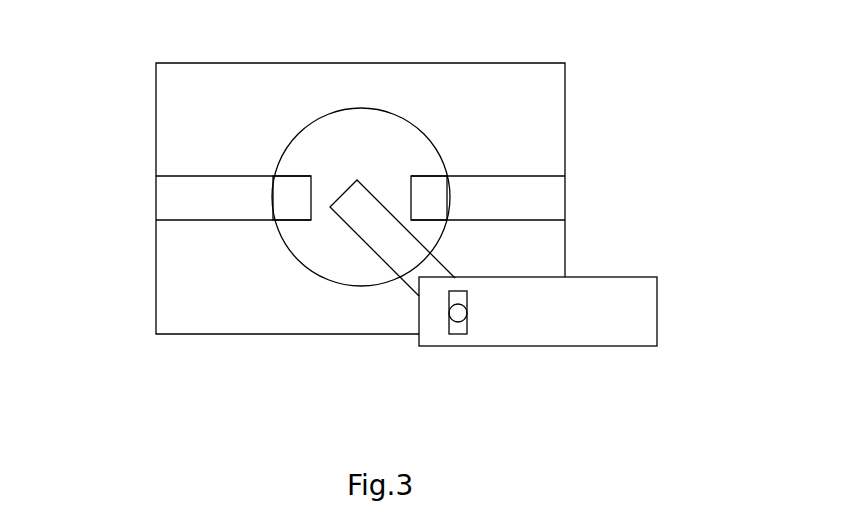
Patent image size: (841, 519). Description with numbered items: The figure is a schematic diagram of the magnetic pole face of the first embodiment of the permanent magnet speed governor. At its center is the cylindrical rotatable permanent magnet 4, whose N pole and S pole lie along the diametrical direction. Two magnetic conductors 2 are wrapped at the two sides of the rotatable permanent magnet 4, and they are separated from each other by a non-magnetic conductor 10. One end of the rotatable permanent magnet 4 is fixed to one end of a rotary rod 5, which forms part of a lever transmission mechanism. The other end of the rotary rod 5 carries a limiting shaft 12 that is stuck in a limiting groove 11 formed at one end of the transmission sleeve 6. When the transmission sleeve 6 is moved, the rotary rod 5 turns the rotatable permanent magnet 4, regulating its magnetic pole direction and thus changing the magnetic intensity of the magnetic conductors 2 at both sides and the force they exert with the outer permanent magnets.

The magnetic conductor 2 is at (200, 113).
The rotatable permanent magnet 4 is at (312, 274).
The rotary rod 5 is at (383, 232).
The transmission sleeve 6 is at (598, 332).
The non-magnetic conductor 10 is at (374, 112).
The limiting groove 11 is at (448, 335).
The limiting shaft 12 is at (458, 322).